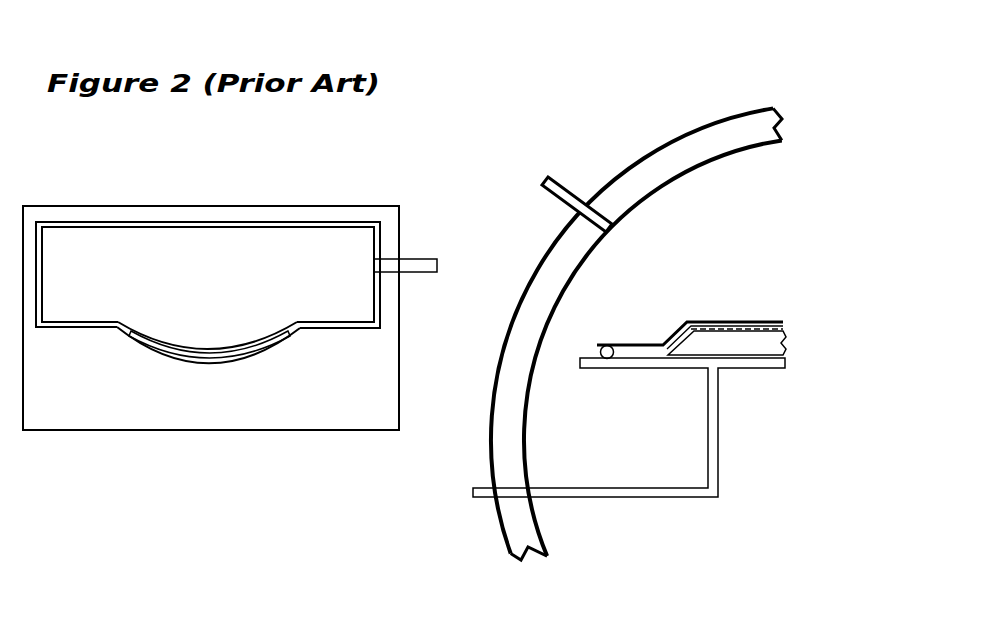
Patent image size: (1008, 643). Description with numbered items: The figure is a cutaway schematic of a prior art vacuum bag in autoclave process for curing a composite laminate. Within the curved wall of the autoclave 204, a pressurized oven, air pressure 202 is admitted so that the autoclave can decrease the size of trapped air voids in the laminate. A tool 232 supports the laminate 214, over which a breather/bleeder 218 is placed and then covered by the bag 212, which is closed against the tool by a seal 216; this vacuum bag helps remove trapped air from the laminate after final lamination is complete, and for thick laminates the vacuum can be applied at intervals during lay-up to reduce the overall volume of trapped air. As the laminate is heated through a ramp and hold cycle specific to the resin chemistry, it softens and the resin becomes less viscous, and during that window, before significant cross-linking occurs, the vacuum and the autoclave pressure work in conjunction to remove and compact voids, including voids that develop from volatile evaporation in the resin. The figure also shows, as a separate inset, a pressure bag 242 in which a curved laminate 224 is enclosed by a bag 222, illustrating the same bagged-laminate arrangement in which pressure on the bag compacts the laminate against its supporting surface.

The air pressure 202 is at (425, 258).
The autoclave 204 is at (622, 542).
The bag 212 is at (700, 322).
The laminate 214 is at (840, 403).
The seal 216 is at (612, 347).
The breather / bleeder 218 is at (765, 317).
The bag 222 is at (130, 327).
The laminate 224 is at (227, 352).
The tool 232 is at (652, 370).
The pressure bag 242 is at (211, 341).